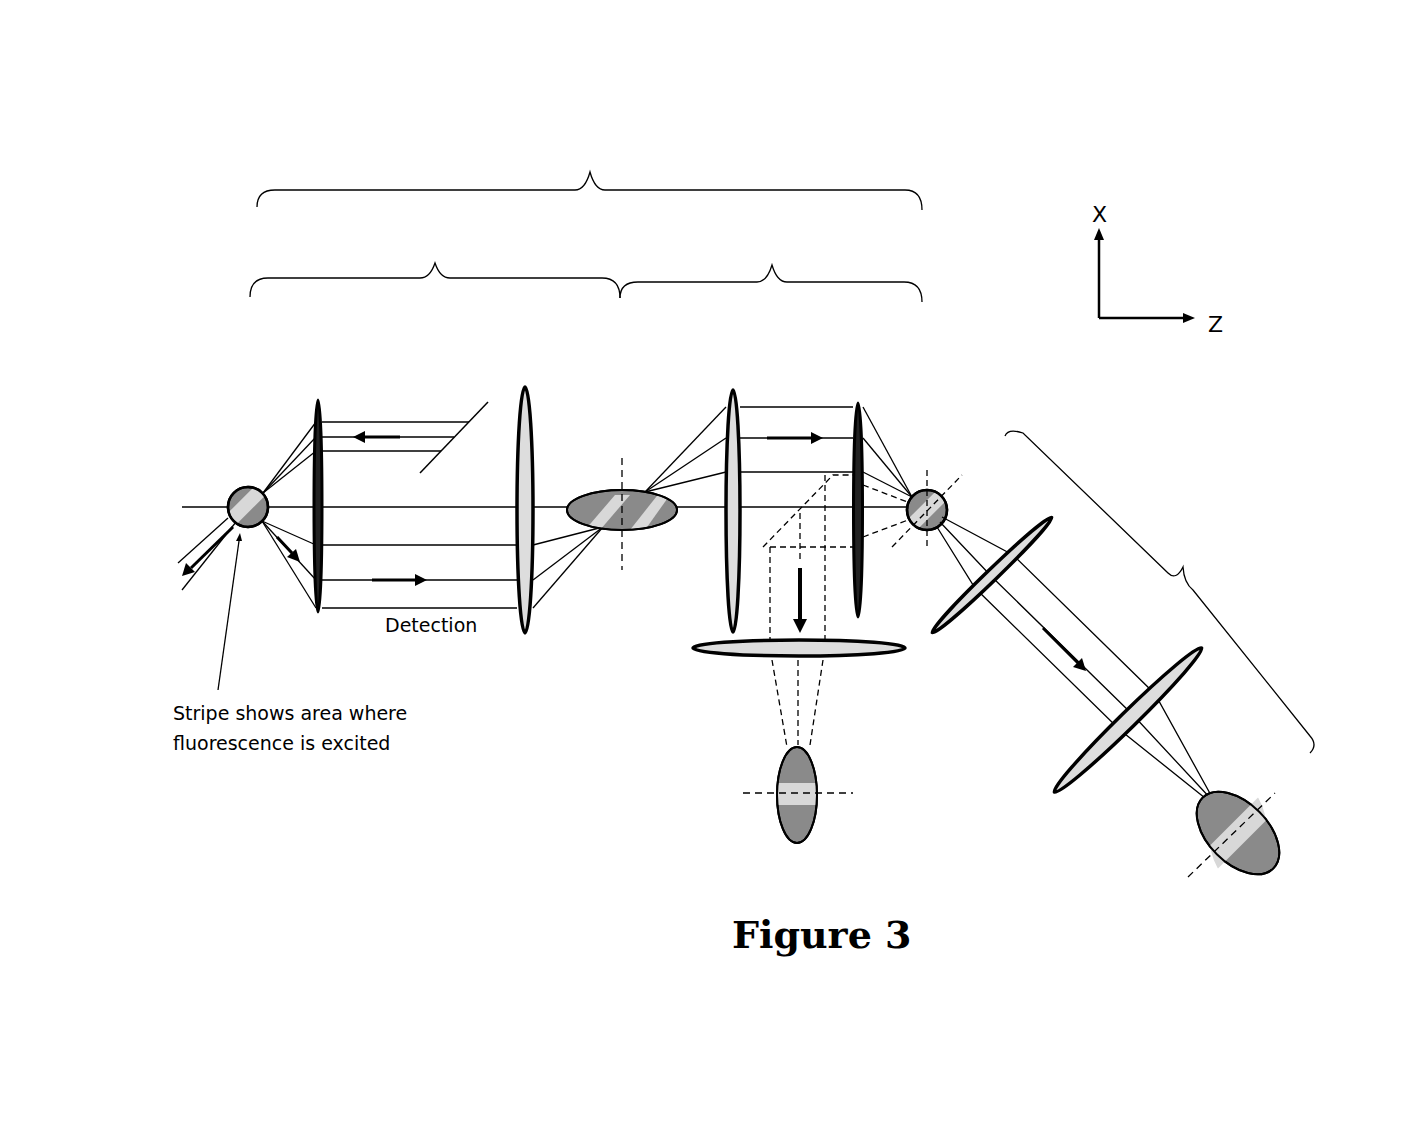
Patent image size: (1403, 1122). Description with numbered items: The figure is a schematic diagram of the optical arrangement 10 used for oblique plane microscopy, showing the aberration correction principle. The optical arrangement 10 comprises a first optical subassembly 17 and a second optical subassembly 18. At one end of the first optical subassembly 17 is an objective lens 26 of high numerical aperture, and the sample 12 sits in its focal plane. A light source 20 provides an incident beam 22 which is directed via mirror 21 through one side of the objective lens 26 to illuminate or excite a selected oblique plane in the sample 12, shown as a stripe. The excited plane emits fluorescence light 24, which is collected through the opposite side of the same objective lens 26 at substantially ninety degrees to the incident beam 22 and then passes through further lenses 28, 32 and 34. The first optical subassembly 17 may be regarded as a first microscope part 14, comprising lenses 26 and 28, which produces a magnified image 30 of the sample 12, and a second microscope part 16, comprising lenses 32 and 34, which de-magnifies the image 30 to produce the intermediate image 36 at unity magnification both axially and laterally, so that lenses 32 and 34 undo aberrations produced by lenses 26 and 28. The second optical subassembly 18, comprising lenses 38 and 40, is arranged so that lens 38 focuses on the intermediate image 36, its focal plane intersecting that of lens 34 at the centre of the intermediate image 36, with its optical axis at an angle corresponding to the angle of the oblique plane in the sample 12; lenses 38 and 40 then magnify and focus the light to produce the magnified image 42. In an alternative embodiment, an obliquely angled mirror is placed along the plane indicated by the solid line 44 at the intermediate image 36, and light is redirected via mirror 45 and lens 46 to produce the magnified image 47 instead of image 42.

The optical arrangement 10 is at (495, 820).
The sample 12 is at (251, 471).
The first microscope part 14 is at (435, 265).
The second microscope part 16 is at (771, 268).
The first optical subassembly 17 is at (589, 176).
The second optical subassembly 18 is at (1159, 592).
The light source 20 is at (455, 403).
The mirror 21 is at (454, 442).
The incident beam 22 is at (289, 457).
The fluorescence light 24 is at (289, 564).
The objective lens 26 is at (317, 521).
The lens 28 is at (525, 524).
The magnified image 30 is at (623, 494).
The lens 32 is at (730, 498).
The lens 34 is at (855, 497).
The intermediate image 36 is at (935, 489).
The lens 38 is at (1001, 566).
The lens 40 is at (1118, 729).
The magnified image 42 is at (1255, 846).
The solid line 44 is at (908, 532).
The mirror 45 is at (798, 557).
The lens 46 is at (784, 650).
The magnified image 47 is at (854, 795).